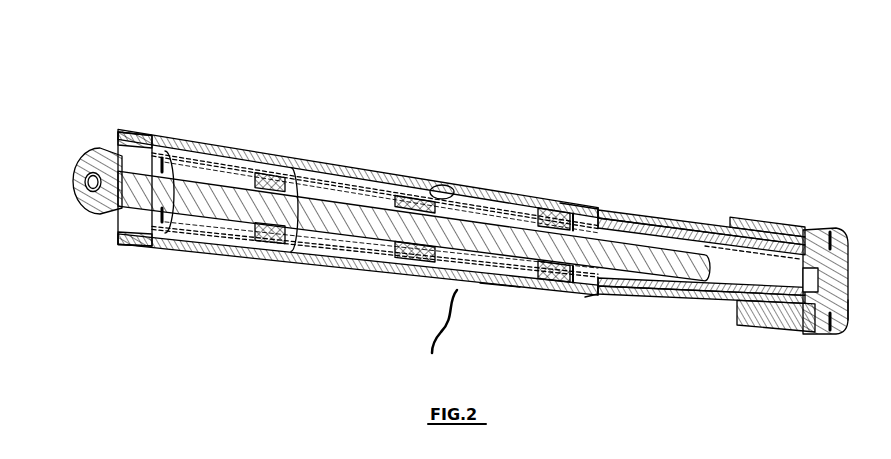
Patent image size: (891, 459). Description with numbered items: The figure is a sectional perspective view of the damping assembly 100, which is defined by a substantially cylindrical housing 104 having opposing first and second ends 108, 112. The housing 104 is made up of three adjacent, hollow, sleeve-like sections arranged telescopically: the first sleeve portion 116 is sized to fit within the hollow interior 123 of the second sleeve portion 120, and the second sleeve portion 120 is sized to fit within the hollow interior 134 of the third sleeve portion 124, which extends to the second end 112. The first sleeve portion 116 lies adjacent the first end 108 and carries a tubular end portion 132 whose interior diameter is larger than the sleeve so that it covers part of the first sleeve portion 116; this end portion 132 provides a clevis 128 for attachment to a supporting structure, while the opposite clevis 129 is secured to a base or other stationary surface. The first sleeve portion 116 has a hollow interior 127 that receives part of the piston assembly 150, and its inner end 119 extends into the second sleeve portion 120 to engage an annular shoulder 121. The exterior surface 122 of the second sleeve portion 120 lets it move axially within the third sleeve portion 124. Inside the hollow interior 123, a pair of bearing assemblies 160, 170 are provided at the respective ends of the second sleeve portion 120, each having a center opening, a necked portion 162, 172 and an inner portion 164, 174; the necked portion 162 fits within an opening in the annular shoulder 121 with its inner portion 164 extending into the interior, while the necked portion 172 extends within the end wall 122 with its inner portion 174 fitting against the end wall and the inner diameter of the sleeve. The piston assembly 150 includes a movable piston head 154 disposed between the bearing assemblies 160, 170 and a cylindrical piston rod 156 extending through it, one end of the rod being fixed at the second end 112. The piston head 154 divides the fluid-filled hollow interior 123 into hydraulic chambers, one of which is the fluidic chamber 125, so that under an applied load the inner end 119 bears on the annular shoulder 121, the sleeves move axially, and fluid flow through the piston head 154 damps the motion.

The damping assembly 100 is at (151, 26).
The housing 104 is at (262, 145).
The first end 108 is at (810, 229).
The second end 112 is at (141, 134).
The first sleeve portion 116 is at (670, 226).
The inner end 119 is at (594, 300).
The second sleeve portion 120 is at (488, 190).
The annular shoulder 121 is at (556, 206).
The exterior surface 122 is at (592, 206).
The hollow interior 123 is at (497, 292).
The third sleeve portion 124 is at (324, 158).
The fluidic chamber 125 is at (308, 270).
The hollow interior 127 is at (703, 312).
The clevis 128 is at (840, 332).
The clevis 129 is at (98, 148).
The end portion 132 is at (772, 331).
The hollow interior 134 is at (205, 238).
The piston assembly 150 is at (446, 190).
The piston head 154 is at (418, 282).
The piston rod 156 is at (342, 274).
The bearing assembly 160 is at (550, 286).
The necked portion 162 is at (562, 290).
The inner portion 164 is at (543, 206).
The bearing assembly 170 is at (272, 244).
The necked portion 172 is at (262, 172).
The inner portion 174 is at (297, 158).